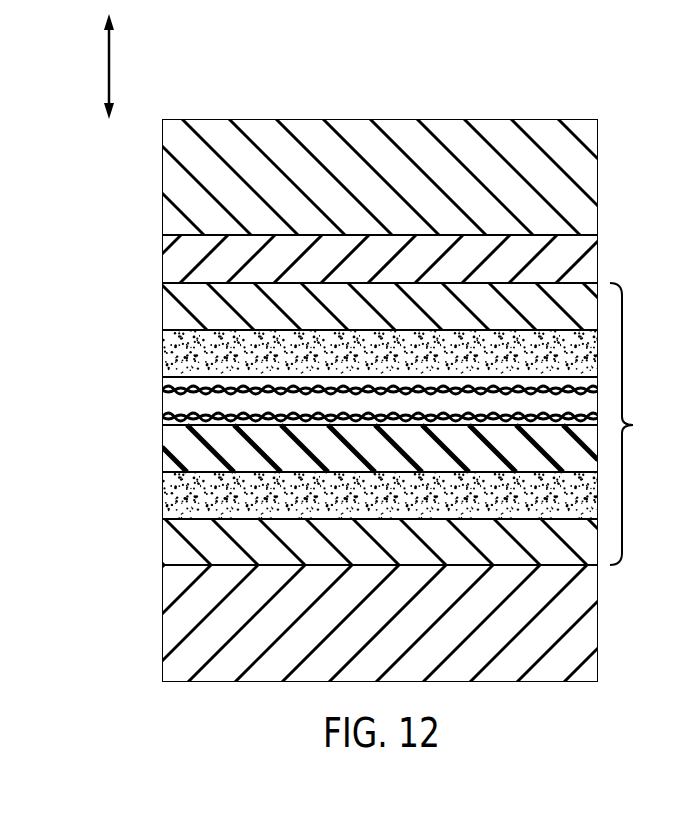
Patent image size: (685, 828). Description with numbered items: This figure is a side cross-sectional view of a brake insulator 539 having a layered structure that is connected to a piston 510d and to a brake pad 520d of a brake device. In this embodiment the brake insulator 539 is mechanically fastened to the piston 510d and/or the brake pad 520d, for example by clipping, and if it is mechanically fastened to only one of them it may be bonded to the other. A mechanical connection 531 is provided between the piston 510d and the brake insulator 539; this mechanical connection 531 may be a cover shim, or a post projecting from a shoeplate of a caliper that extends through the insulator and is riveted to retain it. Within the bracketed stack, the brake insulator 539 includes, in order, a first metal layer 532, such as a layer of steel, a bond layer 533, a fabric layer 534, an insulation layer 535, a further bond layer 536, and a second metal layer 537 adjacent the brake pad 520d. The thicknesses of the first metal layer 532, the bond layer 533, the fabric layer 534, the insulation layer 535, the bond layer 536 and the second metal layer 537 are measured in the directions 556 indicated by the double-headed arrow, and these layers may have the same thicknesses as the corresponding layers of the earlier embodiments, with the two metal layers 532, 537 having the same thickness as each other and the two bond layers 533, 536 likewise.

The piston 510d is at (178, 183).
The brake pad 520d is at (178, 623).
The mechanical connection 531 is at (178, 263).
The first metal layer 532 is at (178, 313).
The bond layer 533 is at (178, 355).
The fabric layer 534 is at (178, 408).
The insulation layer 535 is at (178, 452).
The bond layer 536 is at (178, 500).
The second metal layer 537 is at (178, 543).
The brake insulator 539 is at (640, 424).
The directions 556 is at (109, 70).